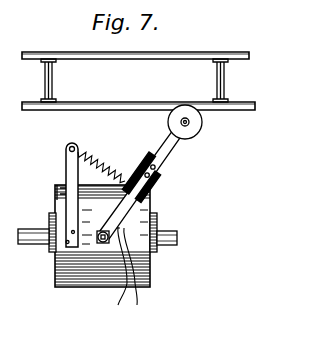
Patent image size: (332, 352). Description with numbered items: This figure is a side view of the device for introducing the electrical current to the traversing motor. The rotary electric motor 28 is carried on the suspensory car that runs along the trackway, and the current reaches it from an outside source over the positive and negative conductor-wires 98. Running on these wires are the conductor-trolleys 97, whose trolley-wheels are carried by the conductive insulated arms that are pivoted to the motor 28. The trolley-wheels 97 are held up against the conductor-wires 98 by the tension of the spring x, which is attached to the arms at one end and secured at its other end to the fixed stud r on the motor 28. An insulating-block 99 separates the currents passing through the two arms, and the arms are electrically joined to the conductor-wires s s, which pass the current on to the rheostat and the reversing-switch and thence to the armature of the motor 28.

The conductor-wires 98 is at (138, 81).
The conductor-trolleys 97 is at (203, 130).
The insulating-block 99 is at (178, 172).
The spring x is at (101, 163).
The fixed stud r is at (59, 195).
The rotary electric motor 28 is at (150, 272).
The conductor-wires s is at (129, 274).